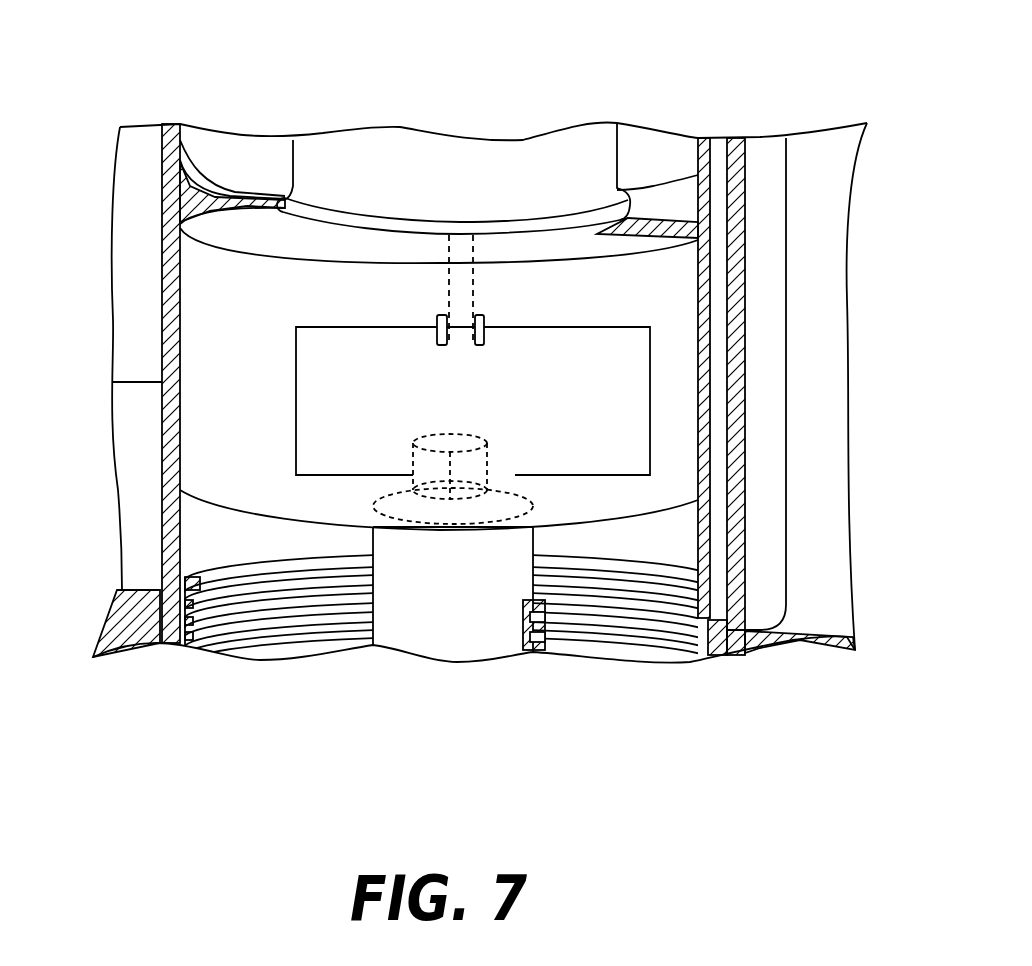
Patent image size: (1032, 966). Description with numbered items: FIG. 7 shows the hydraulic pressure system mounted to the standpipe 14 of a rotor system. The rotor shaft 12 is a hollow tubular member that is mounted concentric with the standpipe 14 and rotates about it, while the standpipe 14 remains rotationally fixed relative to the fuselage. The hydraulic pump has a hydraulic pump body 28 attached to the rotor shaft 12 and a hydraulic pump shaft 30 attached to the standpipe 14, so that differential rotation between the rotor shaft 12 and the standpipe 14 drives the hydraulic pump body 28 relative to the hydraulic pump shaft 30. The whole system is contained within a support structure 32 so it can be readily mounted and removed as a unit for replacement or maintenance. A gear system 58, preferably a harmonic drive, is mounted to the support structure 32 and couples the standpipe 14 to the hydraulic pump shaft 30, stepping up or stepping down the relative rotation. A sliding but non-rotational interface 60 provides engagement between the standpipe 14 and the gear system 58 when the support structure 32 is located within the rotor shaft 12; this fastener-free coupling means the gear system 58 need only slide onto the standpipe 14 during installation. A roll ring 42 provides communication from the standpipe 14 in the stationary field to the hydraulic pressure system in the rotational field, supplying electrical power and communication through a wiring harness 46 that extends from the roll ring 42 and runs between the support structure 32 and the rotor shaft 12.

The rotor shaft 12 is at (767, 243).
The rotor standpipe 14 is at (483, 640).
The hydraulic pump body 28 is at (421, 158).
The hydraulic pump shaft 30 is at (462, 300).
The support structure 32 is at (175, 154).
The roll ring 42 is at (248, 595).
The wiring harness 46 is at (718, 138).
The gear system 58 is at (327, 383).
The sliding non-rotational interface 60 is at (480, 437).